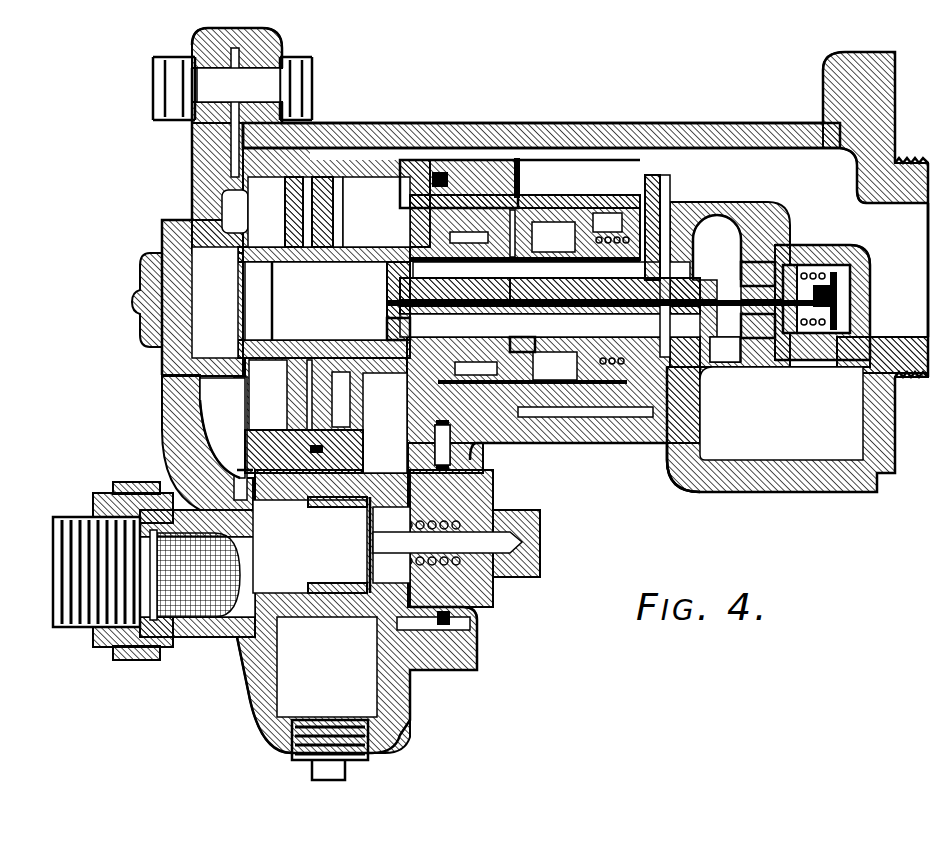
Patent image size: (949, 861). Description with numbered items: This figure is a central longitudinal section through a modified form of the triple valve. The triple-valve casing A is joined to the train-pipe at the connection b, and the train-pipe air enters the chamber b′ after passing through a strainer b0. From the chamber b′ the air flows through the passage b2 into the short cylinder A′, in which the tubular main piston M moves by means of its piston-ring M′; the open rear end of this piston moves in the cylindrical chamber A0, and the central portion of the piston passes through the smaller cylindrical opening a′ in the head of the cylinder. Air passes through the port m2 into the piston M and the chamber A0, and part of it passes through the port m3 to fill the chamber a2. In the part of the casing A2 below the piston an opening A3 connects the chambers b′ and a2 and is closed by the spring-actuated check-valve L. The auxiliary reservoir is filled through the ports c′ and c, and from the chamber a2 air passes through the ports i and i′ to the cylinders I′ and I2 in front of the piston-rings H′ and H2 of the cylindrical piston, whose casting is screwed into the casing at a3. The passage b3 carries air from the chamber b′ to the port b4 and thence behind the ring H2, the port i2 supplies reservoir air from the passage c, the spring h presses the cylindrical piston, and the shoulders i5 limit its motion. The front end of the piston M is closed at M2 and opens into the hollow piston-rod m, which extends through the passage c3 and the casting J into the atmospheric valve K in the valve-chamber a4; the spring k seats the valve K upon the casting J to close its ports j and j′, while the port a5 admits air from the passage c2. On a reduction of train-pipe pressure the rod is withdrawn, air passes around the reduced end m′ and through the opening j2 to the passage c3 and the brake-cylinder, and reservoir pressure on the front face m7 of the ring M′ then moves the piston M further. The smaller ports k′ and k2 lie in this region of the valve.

The triple-valve casing A is at (541, 119).
The cylinder A′ is at (232, 205).
The front face of piston-ring m7 is at (318, 185).
The cylindrical opening a′ is at (318, 340).
The piston-ring M′ is at (296, 222).
The chamber a2 is at (376, 287).
The port i is at (412, 197).
The screw connection a3 is at (455, 183).
The cylinder I′ is at (478, 233).
The port c′ is at (510, 152).
The port i′ is at (525, 220).
The port i2 is at (650, 205).
The passage c is at (784, 243).
The cylinder I2 is at (554, 301).
The valve-chamber a4 is at (812, 272).
The spring k is at (862, 268).
The atmospheric valve K is at (845, 297).
The cylindrical chamber A0 is at (215, 302).
The main piston M is at (316, 301).
The port m2 is at (275, 282).
The closed front end M2 is at (388, 278).
The port m3 is at (390, 332).
The port k′ is at (475, 362).
The piston-ring H′ is at (500, 290).
The port k2 is at (533, 260).
The piston-ring H2 is at (590, 245).
The hollow piston-rod m is at (615, 308).
The casting J is at (717, 247).
The port j′ is at (745, 284).
The port j is at (745, 322).
The passage c3 is at (725, 349).
The opening j2 is at (716, 315).
The reduced end of piston-rod m′ is at (815, 310).
The port a5 is at (840, 335).
The passage c2 is at (781, 413).
The passage b2 is at (220, 439).
The shoulders i5 is at (263, 432).
The part of casing A2 is at (350, 455).
The passage b3 is at (478, 447).
The port b4 is at (545, 385).
The spring h is at (617, 370).
The train-pipe connection b is at (96, 543).
The strainer b0 is at (207, 575).
The chamber b′ is at (327, 667).
The opening A3 is at (310, 545).
The check-valve L is at (446, 540).